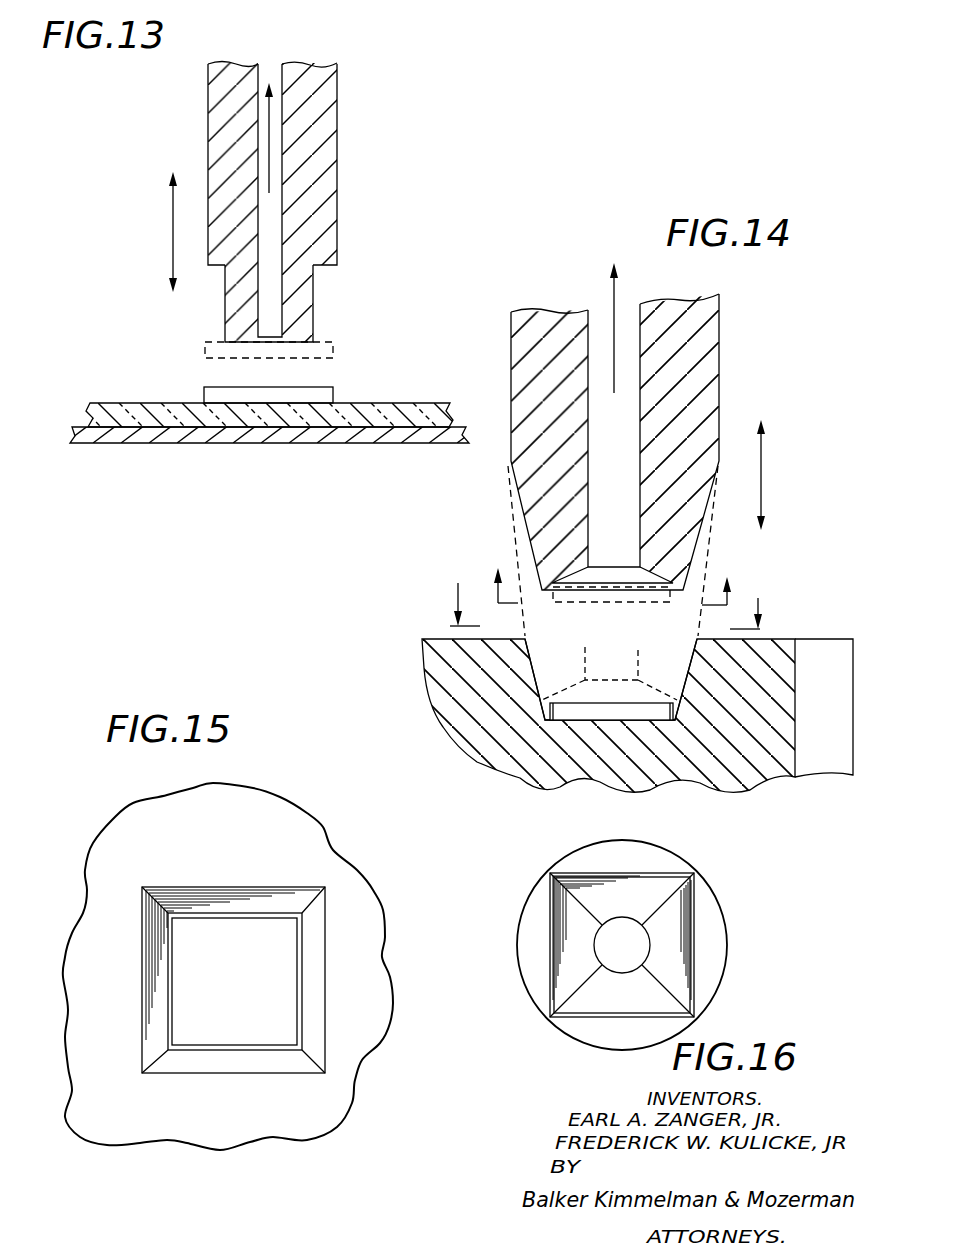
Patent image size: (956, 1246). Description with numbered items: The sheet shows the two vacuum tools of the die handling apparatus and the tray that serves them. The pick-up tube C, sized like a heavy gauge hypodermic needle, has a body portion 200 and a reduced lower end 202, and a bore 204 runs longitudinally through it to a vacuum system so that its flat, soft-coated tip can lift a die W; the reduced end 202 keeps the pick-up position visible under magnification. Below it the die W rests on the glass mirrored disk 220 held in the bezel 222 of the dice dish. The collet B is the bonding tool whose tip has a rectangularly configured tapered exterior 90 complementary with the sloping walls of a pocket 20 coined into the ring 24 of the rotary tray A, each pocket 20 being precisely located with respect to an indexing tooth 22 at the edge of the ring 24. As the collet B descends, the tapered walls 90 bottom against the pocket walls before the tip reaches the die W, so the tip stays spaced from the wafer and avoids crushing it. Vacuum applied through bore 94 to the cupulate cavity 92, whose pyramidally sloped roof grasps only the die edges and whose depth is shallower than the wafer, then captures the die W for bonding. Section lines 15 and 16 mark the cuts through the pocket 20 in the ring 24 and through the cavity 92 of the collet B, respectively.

In FIG. 13, the body portion 200 is at (337, 218).
In FIG. 13, the reduced lower end 202 is at (313, 307).
In FIG. 13, the bore 204 is at (273, 62).
In FIG. 13, the glass mirrored disk 220 is at (144, 378).
In FIG. 13, the bezel 222 is at (148, 441).
In FIG. 13, the pick-up tube C is at (280, 180).
In FIG. 13, the die W is at (333, 346).
In FIG. 14, the die W is at (590, 695).
In FIG. 15, the die W is at (241, 993).
In FIG. 14, the tapered exterior 90 is at (522, 511).
In FIG. 16, the tapered exterior 90 is at (712, 918).
In FIG. 14, the cupulate cavity 92 is at (553, 593).
In FIG. 16, the cupulate cavity 92 is at (622, 874).
In FIG. 14, the bore 94 is at (633, 303).
In FIG. 16, the bore 94 is at (642, 962).
In FIG. 14, the section line 15- 15 is at (609, 596).
In FIG. 14, the section line 16- 16 is at (611, 599).
In FIG. 14, the recessed pocket 20 is at (687, 679).
In FIG. 15, the recessed pocket 20 is at (220, 1062).
In FIG. 14, the indexing tooth 22 is at (846, 624).
In FIG. 14, the ring 24 is at (770, 774).
In FIG. 15, the ring 24 is at (96, 862).
In FIG. 14, the rotary tray A is at (610, 711).
In FIG. 15, the rotary tray A is at (218, 964).
In FIG. 14, the collet B is at (635, 448).
In FIG. 16, the collet B is at (647, 934).